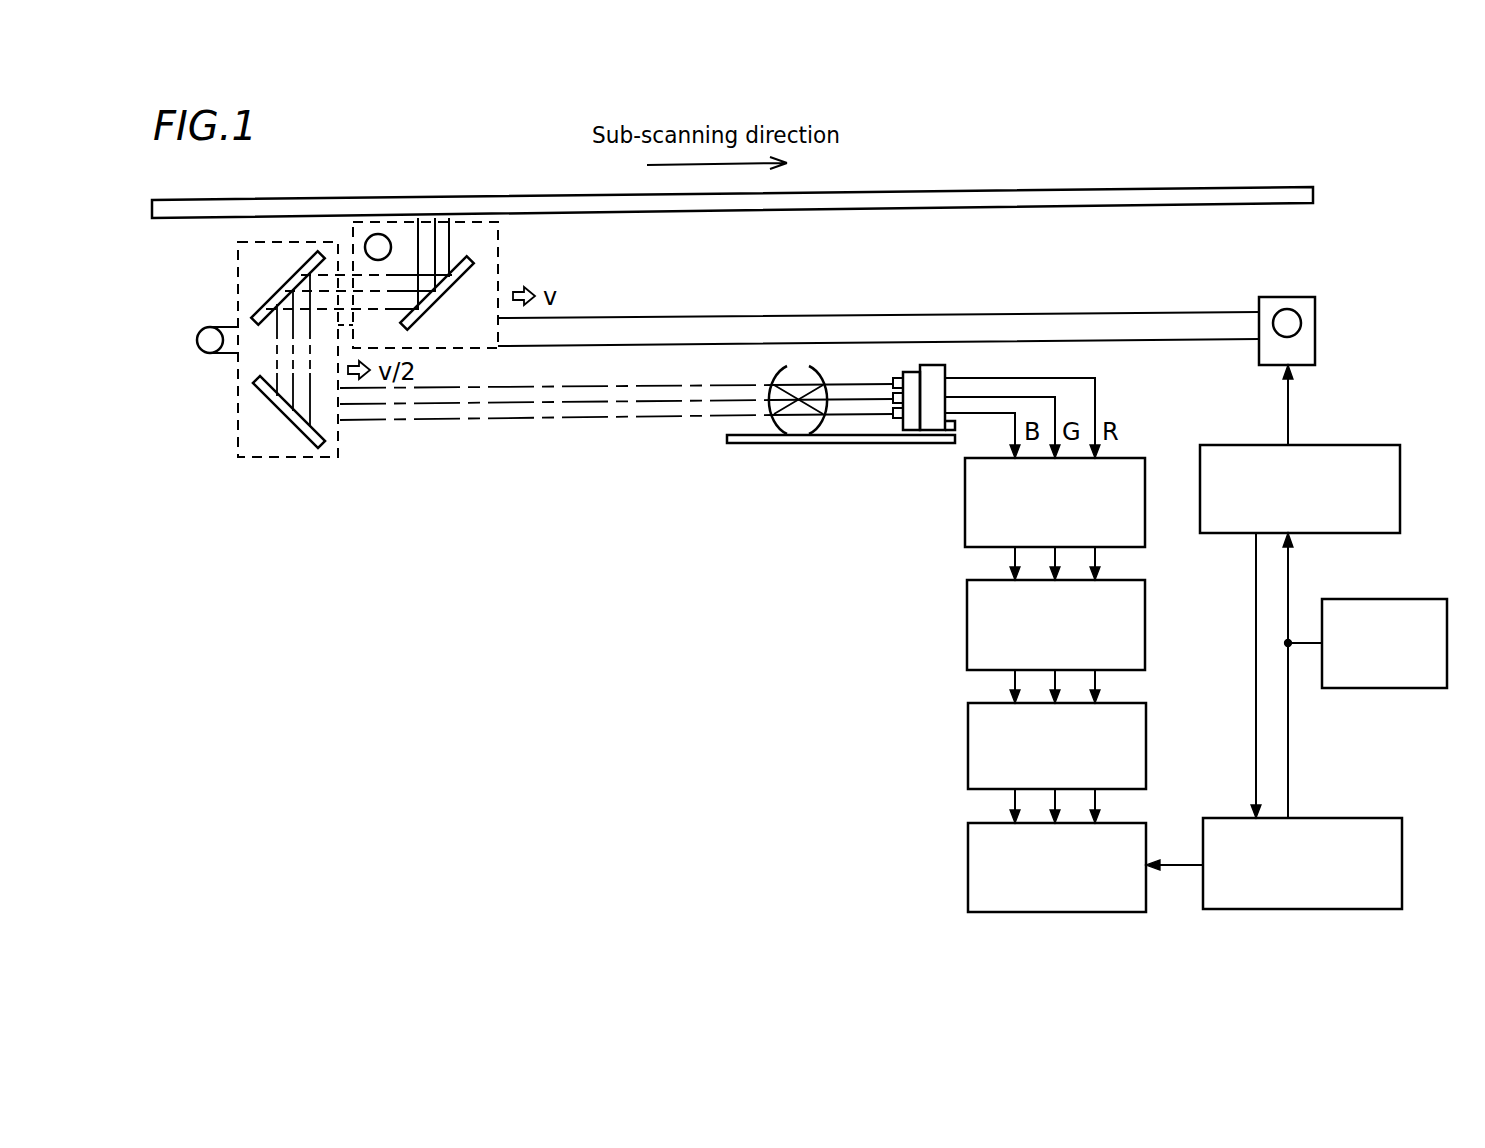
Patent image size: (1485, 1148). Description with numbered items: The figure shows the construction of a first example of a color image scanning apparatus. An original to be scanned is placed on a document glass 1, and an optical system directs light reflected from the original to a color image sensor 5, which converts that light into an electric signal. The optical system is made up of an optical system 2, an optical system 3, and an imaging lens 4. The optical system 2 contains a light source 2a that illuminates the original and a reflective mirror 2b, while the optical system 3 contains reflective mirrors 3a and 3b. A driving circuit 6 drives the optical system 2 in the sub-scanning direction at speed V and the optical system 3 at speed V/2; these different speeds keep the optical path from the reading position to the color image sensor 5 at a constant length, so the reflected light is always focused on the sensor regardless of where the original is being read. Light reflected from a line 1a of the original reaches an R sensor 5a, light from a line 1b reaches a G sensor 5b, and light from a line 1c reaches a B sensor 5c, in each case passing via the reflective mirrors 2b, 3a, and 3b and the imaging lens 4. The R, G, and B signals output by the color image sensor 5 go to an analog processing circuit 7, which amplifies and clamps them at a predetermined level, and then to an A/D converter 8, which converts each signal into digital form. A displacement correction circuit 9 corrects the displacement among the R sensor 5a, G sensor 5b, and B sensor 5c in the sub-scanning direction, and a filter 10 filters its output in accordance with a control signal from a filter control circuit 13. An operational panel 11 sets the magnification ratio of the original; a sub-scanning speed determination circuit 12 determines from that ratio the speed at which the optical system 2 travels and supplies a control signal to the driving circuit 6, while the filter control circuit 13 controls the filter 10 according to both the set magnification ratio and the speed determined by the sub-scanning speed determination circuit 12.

The document glass 1 is at (1225, 187).
The line of the original 1a is at (451, 199).
The line of the original 1b is at (434, 198).
The line of the original 1c is at (417, 199).
The optical system 2 is at (500, 236).
The light source 2a is at (378, 234).
The reflective mirror 2b is at (462, 283).
The optical system 3 is at (279, 460).
The reflective mirror 3a is at (275, 289).
The reflective mirror 3b is at (300, 429).
The imaging lens 4 is at (779, 435).
The color image sensor 5 is at (935, 372).
The R sensor 5a is at (893, 380).
The G sensor 5b is at (893, 385).
The B sensor 5c is at (896, 430).
The driving circuit 6 is at (1316, 318).
The analog processing circuit 7 is at (1123, 458).
The A/D converter 8 is at (1146, 610).
The displacement correction circuit 9 is at (1146, 732).
The filter 10 is at (1147, 839).
The operational panel 11 is at (1400, 599).
The sub-scanning speed determination circuit 12 is at (1361, 445).
The filter control circuit 13 is at (1353, 818).